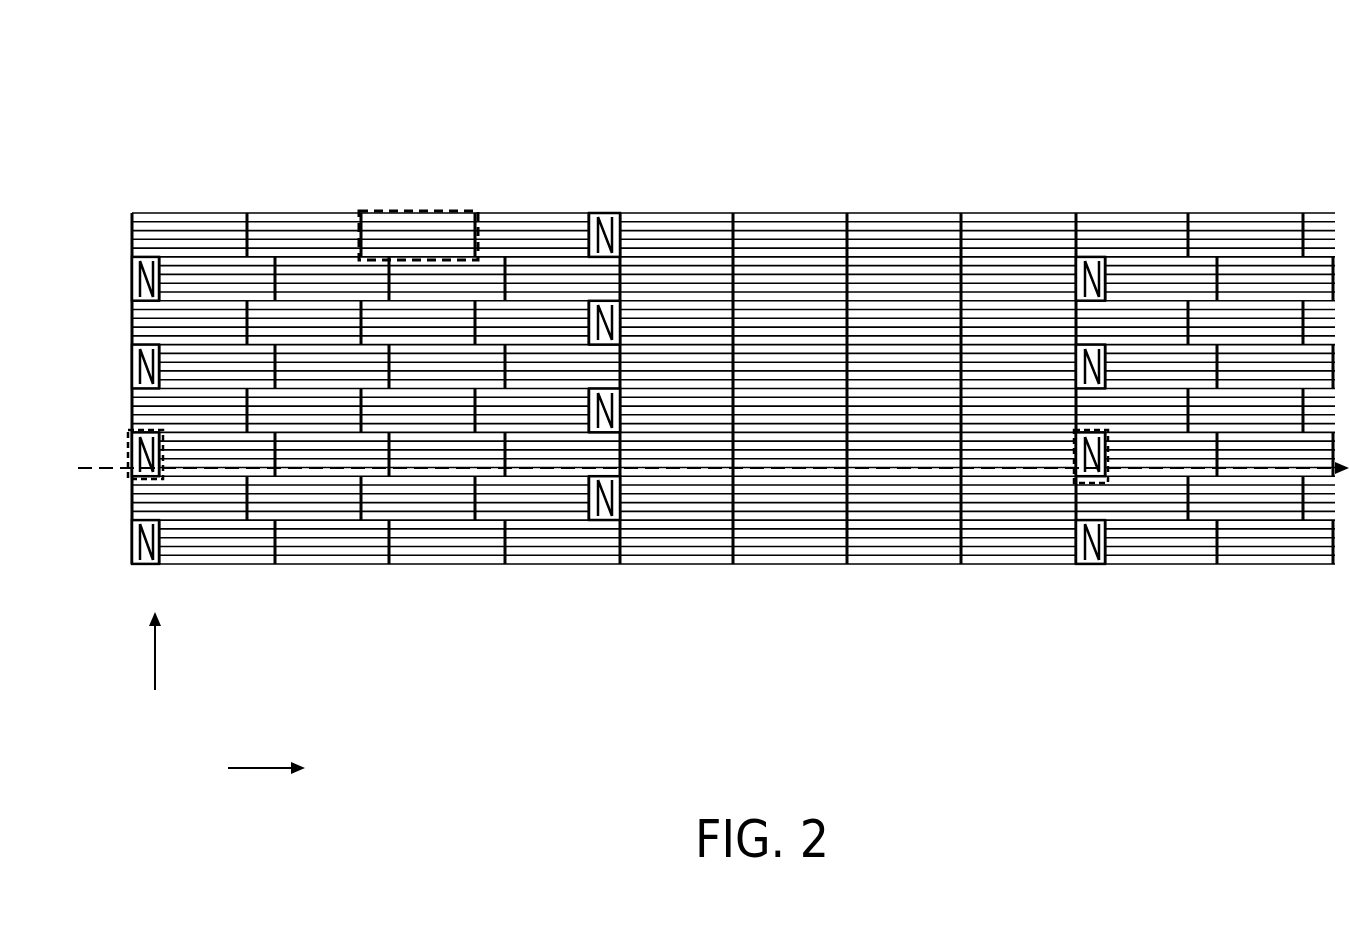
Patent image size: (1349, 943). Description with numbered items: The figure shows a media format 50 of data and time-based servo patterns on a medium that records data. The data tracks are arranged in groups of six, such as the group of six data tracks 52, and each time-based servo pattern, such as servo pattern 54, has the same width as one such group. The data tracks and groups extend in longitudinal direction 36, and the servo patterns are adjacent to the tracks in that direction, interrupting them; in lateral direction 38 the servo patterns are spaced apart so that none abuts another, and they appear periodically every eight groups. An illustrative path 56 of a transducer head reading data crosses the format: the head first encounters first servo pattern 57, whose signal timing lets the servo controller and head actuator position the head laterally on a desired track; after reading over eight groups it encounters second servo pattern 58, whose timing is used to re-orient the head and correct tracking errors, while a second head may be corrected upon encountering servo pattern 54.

The format 50 is at (261, 80).
The group of six data tracks 52 is at (422, 205).
The servo pattern 54 is at (611, 205).
The path 56 is at (108, 476).
The first servo pattern 57 is at (124, 436).
The second servo pattern 58 is at (1076, 492).
The longitudinal direction 36 is at (249, 768).
The lateral direction 38 is at (155, 668).